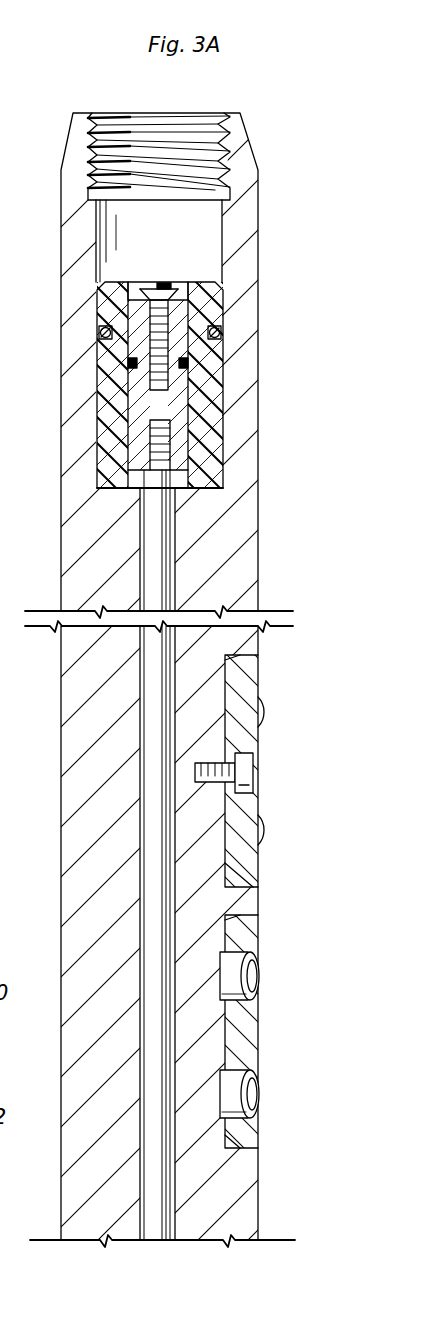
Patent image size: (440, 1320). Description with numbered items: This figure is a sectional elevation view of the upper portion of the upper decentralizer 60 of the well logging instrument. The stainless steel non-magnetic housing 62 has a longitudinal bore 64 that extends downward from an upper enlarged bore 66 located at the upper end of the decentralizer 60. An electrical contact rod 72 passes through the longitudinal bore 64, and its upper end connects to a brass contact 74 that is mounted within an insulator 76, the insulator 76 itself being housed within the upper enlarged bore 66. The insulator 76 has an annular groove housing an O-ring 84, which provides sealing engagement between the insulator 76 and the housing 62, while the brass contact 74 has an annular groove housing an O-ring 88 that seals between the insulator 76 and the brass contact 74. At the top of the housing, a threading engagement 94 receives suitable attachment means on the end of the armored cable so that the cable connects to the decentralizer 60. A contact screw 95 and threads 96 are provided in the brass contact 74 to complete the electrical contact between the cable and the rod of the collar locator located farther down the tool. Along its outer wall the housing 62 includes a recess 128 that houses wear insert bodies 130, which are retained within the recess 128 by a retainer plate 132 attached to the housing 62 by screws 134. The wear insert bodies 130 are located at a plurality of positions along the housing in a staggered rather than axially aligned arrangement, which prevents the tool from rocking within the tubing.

The decentralizer 60 is at (266, 537).
The housing 62 is at (245, 306).
The longitudinal bore 64 is at (147, 551).
The upper enlarged bore 66 is at (208, 221).
The electrical contact rod 72 is at (157, 588).
The brass contact 74 is at (138, 313).
The insulator 76 is at (105, 393).
The O-ring 84 is at (100, 336).
The O-ring 88 is at (130, 363).
The threading engagement 94 is at (238, 168).
The contact screw 95 is at (173, 291).
The threads 96 is at (172, 443).
The recess 128 is at (240, 917).
The wear insert body 130 is at (263, 713).
The retainer plate 132 is at (243, 875).
The screw 134 is at (250, 768).